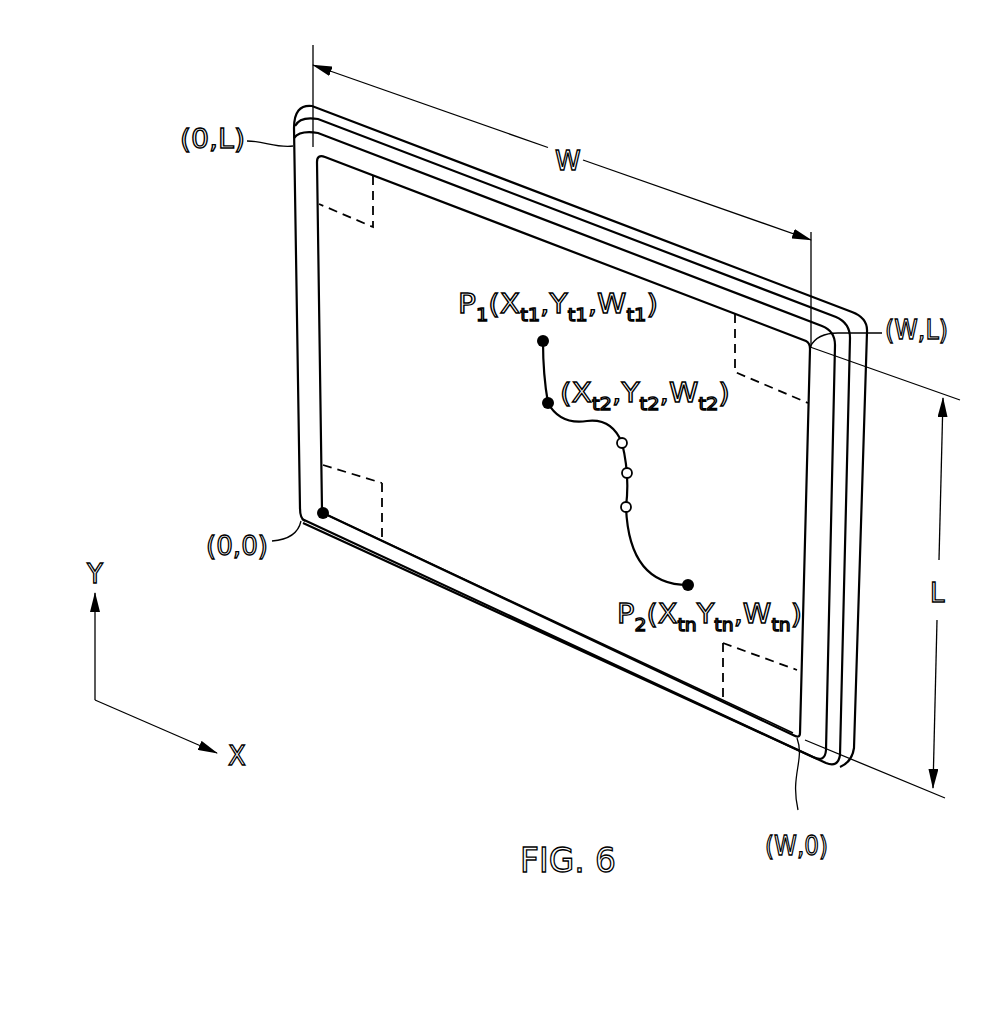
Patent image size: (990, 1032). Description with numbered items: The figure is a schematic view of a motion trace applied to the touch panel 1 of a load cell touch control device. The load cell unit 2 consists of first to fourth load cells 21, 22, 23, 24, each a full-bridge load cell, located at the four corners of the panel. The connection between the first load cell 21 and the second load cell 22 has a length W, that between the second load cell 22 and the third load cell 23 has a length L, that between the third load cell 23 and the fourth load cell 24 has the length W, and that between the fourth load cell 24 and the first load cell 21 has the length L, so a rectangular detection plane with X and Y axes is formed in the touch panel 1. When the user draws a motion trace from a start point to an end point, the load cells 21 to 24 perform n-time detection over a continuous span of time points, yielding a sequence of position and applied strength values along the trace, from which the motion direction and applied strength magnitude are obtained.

The touch panel 1 is at (293, 352).
The load cell unit 2 is at (556, 488).
The first load cell 21 is at (337, 485).
The second load cell 22 is at (753, 692).
The third load cell 23 is at (763, 372).
The fourth load cell 24 is at (328, 177).